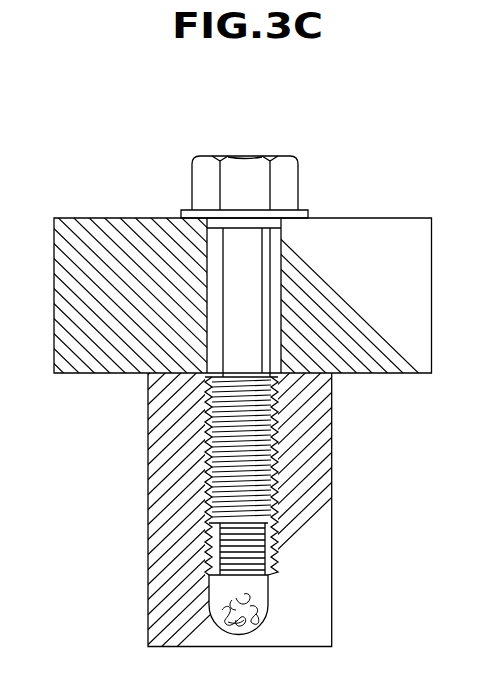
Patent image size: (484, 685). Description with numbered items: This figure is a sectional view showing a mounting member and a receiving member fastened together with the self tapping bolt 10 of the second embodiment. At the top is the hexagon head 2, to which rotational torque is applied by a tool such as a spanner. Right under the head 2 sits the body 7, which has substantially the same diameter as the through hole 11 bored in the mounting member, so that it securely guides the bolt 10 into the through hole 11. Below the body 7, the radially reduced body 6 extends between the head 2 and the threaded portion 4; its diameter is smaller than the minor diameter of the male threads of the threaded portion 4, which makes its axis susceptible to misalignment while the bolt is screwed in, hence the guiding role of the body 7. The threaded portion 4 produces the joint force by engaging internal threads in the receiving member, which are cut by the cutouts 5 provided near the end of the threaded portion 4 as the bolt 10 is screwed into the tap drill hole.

The self tapping bolt 10 is at (258, 321).
The head 2 is at (290, 172).
The body 7 is at (212, 223).
The through hole 11 is at (282, 262).
The radially reduced body 6 is at (250, 333).
The threaded portion 4 is at (253, 470).
The cutouts 5 is at (205, 545).